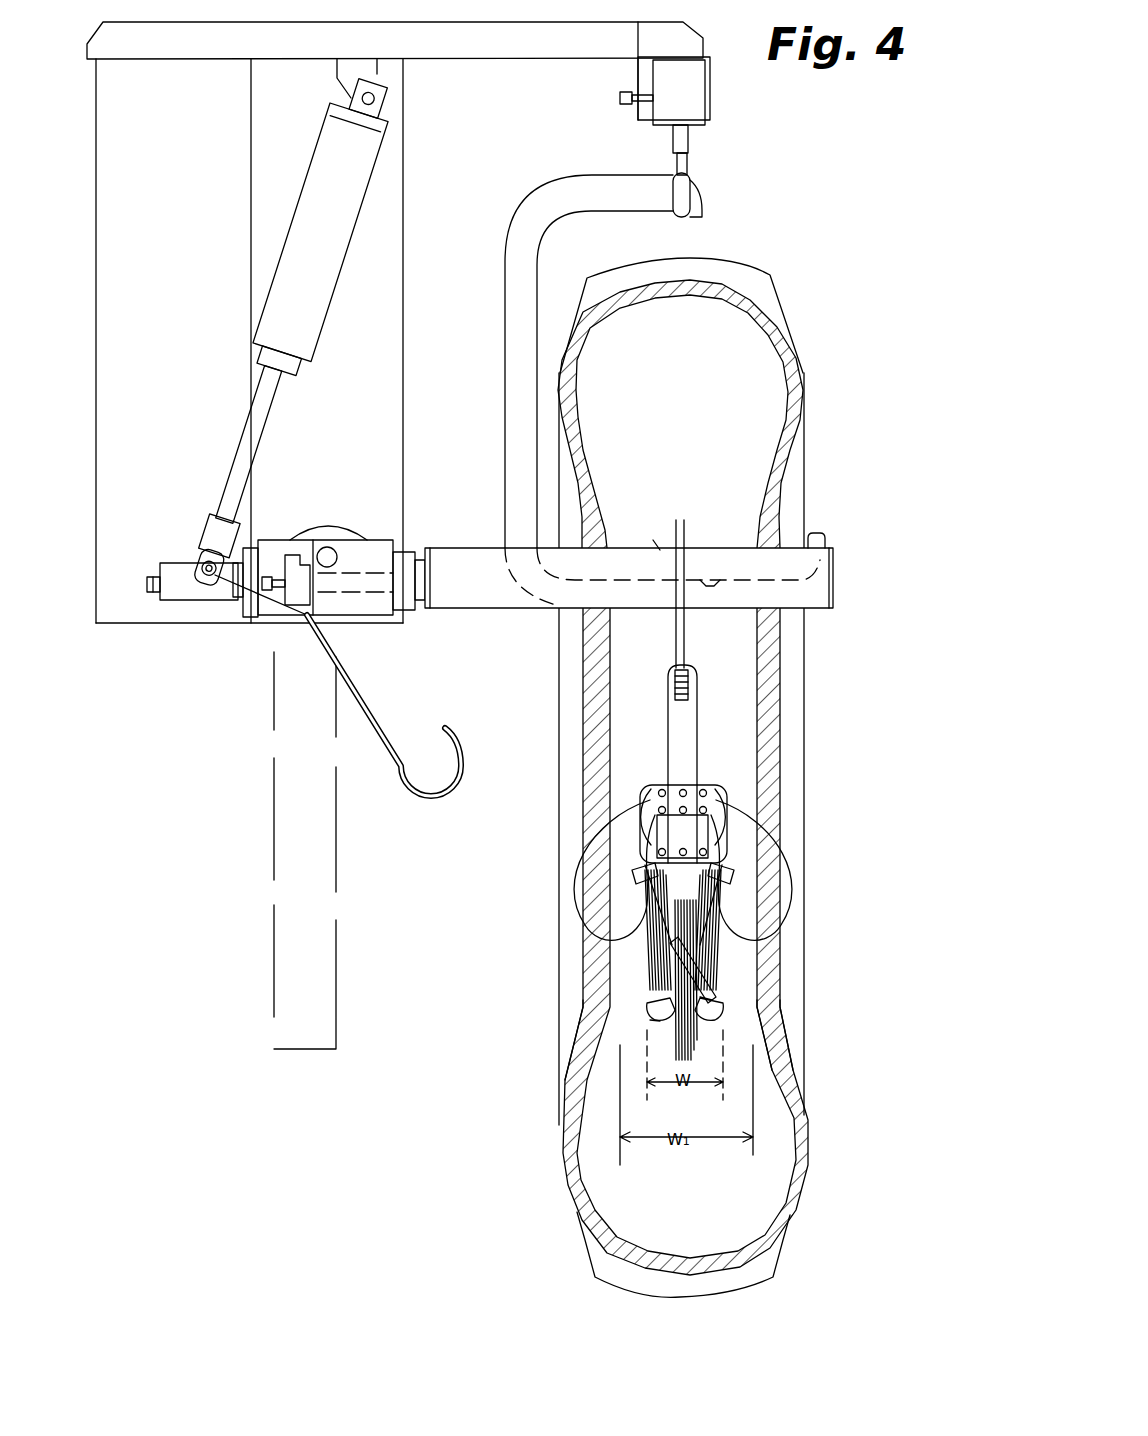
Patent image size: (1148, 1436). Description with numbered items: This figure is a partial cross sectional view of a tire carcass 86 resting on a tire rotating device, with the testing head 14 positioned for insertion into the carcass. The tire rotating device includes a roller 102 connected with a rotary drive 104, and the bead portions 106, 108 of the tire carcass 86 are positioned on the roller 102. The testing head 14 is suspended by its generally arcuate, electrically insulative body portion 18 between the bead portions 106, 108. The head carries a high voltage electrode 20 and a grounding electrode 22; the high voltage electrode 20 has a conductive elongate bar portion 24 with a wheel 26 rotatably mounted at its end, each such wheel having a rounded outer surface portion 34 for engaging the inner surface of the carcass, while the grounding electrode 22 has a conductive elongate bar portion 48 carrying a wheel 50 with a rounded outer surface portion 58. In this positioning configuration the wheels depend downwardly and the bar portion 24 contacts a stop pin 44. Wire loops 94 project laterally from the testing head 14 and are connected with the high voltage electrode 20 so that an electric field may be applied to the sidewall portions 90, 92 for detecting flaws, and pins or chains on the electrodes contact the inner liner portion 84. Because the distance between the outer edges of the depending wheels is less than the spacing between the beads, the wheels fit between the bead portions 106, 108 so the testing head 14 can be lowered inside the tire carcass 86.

The testing head 14 is at (727, 787).
The body portion 18 is at (697, 713).
The high voltage electrode 20 is at (712, 990).
The grounding electrode 22 is at (647, 1000).
The elongate bar portion 24 is at (707, 965).
The wheel 26 is at (723, 1005).
The rounded outer surface portion 34 is at (760, 1047).
The stop pin 44 is at (673, 905).
The elongate bar portion 48 is at (673, 953).
The wheel 50 is at (650, 1011).
The rounded outer surface portion 58 is at (633, 1022).
The inner liner portion 84 is at (637, 1243).
The tire carcass 86 is at (812, 1182).
The sidewall portion 90 is at (563, 1157).
The sidewall portion 92 is at (812, 1148).
The wire loops 94 is at (593, 858).
The roller 102 is at (835, 603).
The rotary drive 104 is at (202, 592).
The bead portion 106 is at (563, 1008).
The bead portion 108 is at (783, 1010).